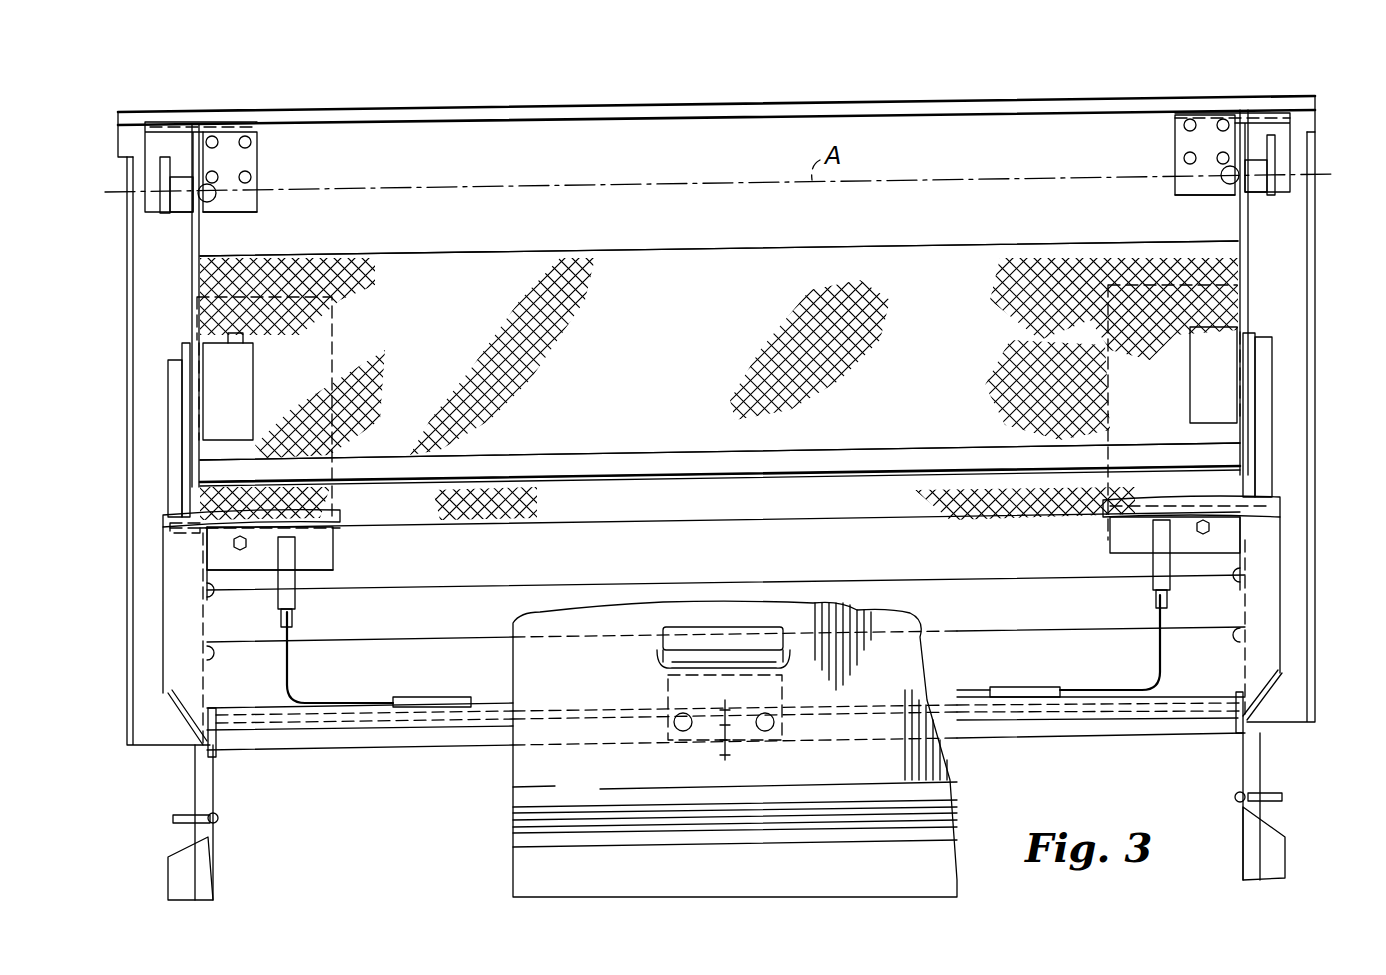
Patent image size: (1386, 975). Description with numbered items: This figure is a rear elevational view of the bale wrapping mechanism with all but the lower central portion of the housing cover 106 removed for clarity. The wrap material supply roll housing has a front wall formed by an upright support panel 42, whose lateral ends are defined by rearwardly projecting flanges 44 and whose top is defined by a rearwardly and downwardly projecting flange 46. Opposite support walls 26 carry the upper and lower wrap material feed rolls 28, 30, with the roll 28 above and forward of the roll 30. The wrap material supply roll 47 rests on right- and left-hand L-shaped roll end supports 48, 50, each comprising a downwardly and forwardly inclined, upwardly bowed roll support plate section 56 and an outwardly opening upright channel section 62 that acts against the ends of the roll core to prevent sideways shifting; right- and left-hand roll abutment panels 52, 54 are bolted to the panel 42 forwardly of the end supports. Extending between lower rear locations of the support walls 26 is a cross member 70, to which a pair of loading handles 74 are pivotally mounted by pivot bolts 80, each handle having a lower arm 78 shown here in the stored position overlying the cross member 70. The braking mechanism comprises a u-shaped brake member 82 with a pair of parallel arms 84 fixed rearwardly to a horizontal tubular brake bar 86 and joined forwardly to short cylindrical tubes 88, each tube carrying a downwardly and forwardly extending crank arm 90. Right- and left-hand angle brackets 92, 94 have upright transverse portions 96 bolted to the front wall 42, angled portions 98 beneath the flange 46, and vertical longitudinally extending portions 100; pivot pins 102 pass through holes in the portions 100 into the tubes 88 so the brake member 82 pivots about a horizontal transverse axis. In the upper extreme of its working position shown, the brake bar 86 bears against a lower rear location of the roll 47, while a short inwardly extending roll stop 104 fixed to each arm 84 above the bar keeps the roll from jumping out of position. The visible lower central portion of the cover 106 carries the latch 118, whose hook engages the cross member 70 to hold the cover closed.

The support walls 26 is at (212, 612).
The wrap material feed roll 28 is at (958, 577).
The wrap material feed roll 30 is at (1010, 627).
The upright support panel 42 is at (718, 172).
The rearwardly projecting flanges 44 is at (128, 200).
The rearwardly and downwardly projecting flange 46 is at (740, 108).
The wrap material supply roll 47 is at (945, 238).
The right-hand L-shaped roll end support 48 is at (1270, 362).
The left-hand L-shaped roll end support 50 is at (170, 412).
The right-hand roll abutment panel 52 is at (1106, 344).
The left-hand roll abutment panel 54 is at (336, 344).
The roll support plate section 56 is at (340, 520).
The upright channel section 62 is at (183, 470).
The cross member 70 is at (306, 576).
The loading handles 74 is at (296, 606).
The lower arm 78 is at (376, 698).
The pivot bolt 80 is at (302, 698).
The brake member 82 is at (781, 364).
The arms 84 is at (190, 245).
The brake bar 86 is at (640, 452).
The short cylindrical tubes 88 is at (168, 125).
The crank arm 90 is at (150, 178).
The right-hand angle bracket 92 is at (1176, 156).
The left-hand angle bracket 94 is at (260, 153).
The upright transverse portions 96 is at (244, 212).
The downwardly and rearwardly angled portions 98 is at (288, 88).
The vertical longitudinally extending portions 100 is at (222, 132).
The pivot pins 102 is at (214, 194).
The roll stop 104 is at (236, 394).
The cover 106 is at (950, 776).
The latch 118 is at (645, 676).